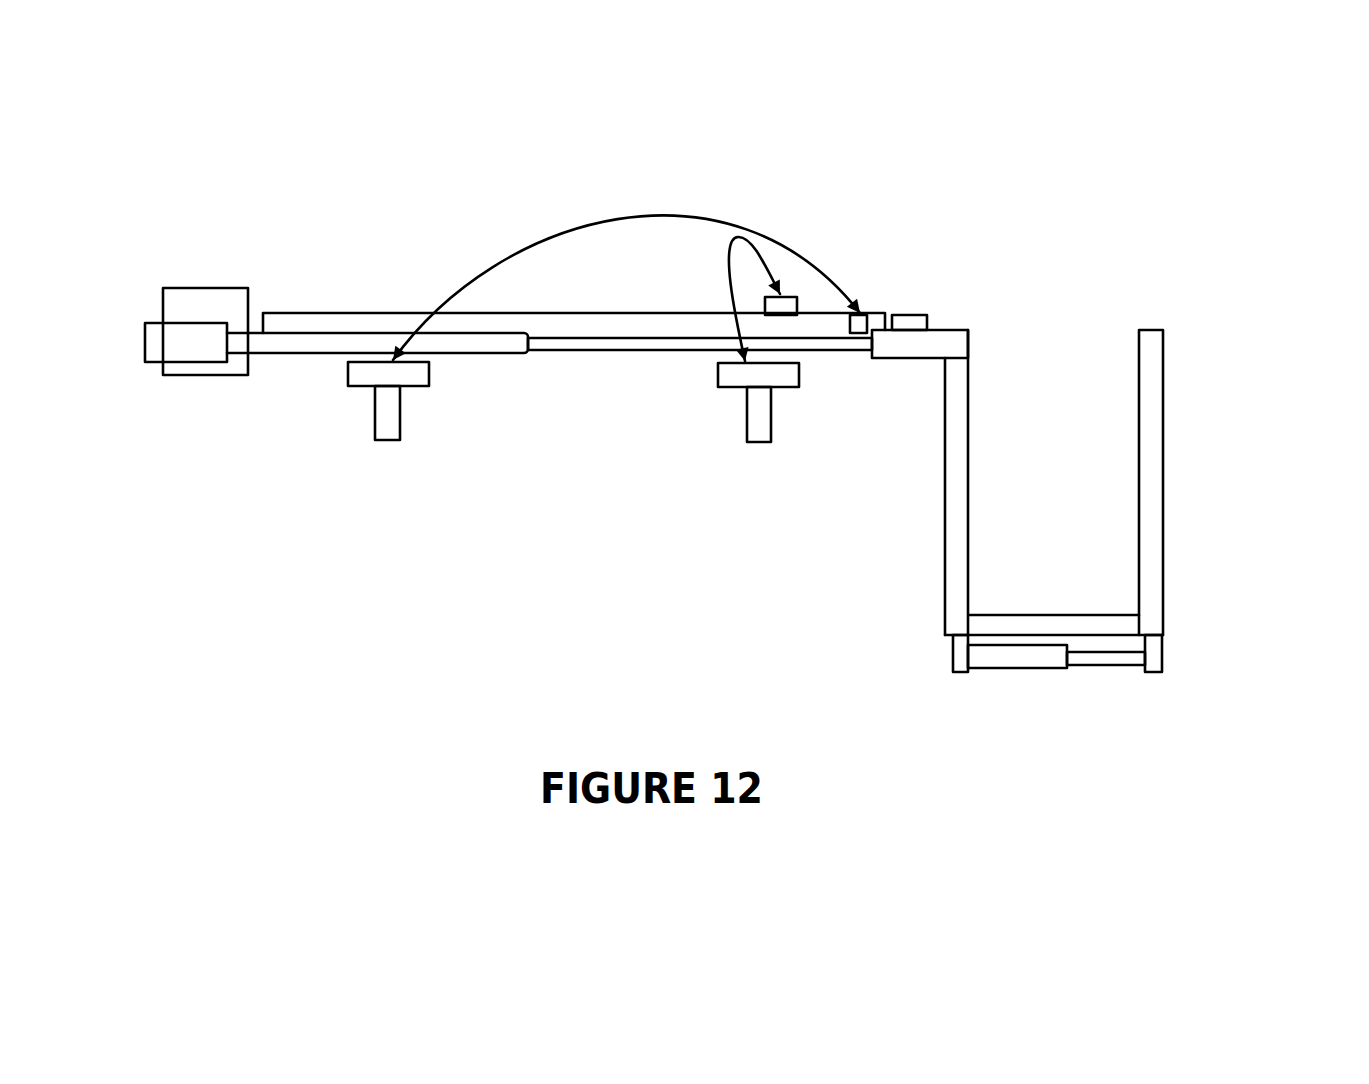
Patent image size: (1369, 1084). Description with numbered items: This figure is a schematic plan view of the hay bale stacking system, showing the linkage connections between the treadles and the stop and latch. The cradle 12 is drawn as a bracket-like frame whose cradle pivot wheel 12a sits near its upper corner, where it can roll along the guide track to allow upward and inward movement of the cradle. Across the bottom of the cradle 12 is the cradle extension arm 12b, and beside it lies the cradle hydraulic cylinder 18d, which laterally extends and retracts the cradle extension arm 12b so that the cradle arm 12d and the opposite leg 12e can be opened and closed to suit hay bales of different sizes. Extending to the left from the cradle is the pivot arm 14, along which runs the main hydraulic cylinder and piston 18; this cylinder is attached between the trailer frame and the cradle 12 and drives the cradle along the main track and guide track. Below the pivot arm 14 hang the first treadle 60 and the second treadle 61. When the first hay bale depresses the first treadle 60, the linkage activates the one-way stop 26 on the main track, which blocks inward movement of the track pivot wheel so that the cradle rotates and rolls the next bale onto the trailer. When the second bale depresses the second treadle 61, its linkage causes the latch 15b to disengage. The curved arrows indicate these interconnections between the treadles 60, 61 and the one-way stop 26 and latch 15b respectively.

The cradle 12 is at (1212, 706).
The cradle pivot wheel 12a is at (910, 315).
The cradle extension arm 12b is at (1112, 627).
The cradle arm 12d is at (1164, 516).
The bracket left leg 12e is at (957, 513).
The pivot arm 14 is at (285, 323).
The latch 15b is at (785, 296).
The main hydraulic cylinder and piston 18 is at (247, 347).
The cradle hydraulic cylinder 18d is at (1042, 660).
The one-way stop 26 is at (863, 313).
The first treadle 60 is at (400, 429).
The second treadle 61 is at (753, 417).